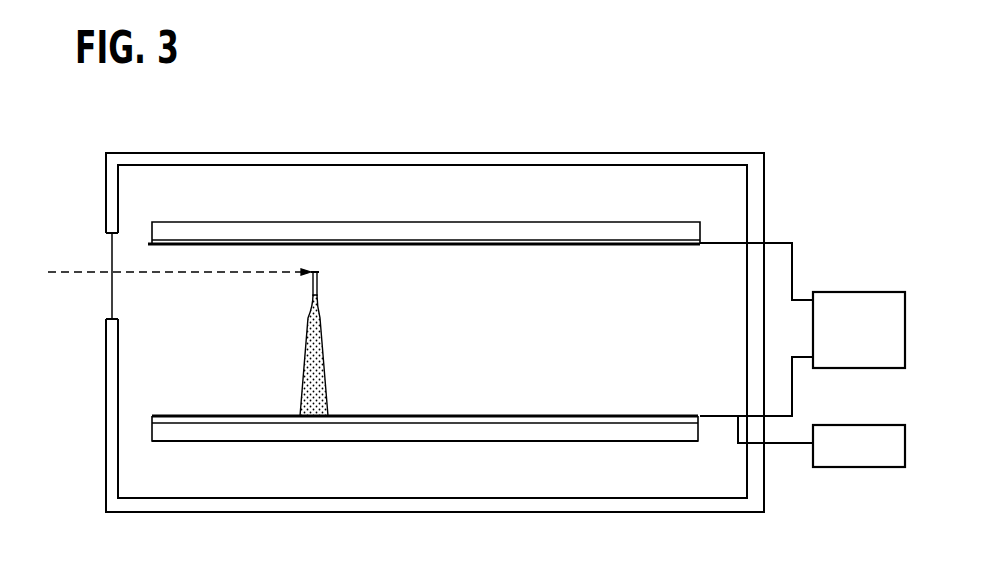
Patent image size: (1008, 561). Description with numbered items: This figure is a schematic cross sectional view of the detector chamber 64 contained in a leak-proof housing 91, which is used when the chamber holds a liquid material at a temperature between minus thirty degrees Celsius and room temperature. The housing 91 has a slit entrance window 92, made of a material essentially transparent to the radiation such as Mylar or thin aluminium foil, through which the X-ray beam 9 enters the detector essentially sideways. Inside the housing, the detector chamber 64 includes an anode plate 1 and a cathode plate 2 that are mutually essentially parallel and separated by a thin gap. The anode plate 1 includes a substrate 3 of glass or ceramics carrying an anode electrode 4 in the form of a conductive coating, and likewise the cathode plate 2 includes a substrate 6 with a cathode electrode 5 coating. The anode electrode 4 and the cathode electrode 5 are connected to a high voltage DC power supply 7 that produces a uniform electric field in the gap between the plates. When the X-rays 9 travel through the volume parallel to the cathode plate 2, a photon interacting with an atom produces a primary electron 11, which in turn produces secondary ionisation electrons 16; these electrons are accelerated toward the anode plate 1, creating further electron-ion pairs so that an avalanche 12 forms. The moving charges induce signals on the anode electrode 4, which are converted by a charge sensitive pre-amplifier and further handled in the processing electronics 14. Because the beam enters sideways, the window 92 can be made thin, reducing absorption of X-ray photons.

The detector chamber 64 is at (435, 272).
The leak-proof housing 91 is at (218, 158).
The slit entrance window 92 is at (105, 297).
The X-rays 9 is at (50, 270).
The cathode plate 2 is at (593, 215).
The substrate 6 is at (638, 230).
The cathode electrode 5 is at (697, 243).
The high voltage DC power supply 7 is at (849, 344).
The processing electronics 14 is at (845, 461).
The anode plate 1 is at (592, 445).
The substrate 3 is at (628, 436).
The anode electrode 4 is at (597, 414).
The avalanche 12 is at (321, 355).
The secondary ionisation electrons 16 is at (319, 280).
The primary electron 11 is at (318, 271).